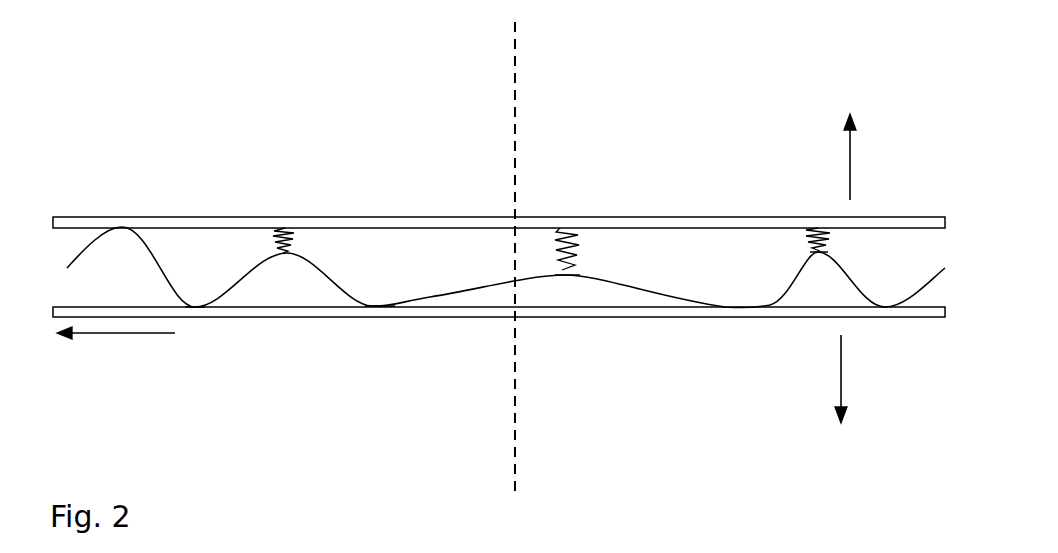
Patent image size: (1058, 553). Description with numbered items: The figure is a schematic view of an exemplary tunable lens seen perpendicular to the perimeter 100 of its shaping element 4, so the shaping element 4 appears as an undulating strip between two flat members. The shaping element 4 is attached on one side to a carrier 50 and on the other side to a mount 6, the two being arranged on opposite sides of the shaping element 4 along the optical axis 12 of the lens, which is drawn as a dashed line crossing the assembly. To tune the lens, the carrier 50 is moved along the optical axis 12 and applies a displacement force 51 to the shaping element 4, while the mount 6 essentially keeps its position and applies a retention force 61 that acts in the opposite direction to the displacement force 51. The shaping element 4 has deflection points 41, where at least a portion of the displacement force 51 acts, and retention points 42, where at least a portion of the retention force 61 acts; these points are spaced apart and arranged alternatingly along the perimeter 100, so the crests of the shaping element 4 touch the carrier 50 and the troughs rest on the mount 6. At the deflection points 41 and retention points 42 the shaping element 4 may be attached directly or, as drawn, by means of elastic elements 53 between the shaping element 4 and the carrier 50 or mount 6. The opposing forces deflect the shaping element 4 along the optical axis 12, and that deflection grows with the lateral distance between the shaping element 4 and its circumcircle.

The optical axis 12 is at (513, 118).
The carrier 50 is at (425, 216).
The mount 6 is at (513, 336).
The shaping element 4 is at (328, 278).
The retention points 42 is at (385, 304).
The deflection points 41 is at (575, 278).
The elastic elements 53 is at (285, 216).
The perimeter 100 is at (116, 352).
The displacement force 51 is at (865, 157).
The retention force 61 is at (857, 379).